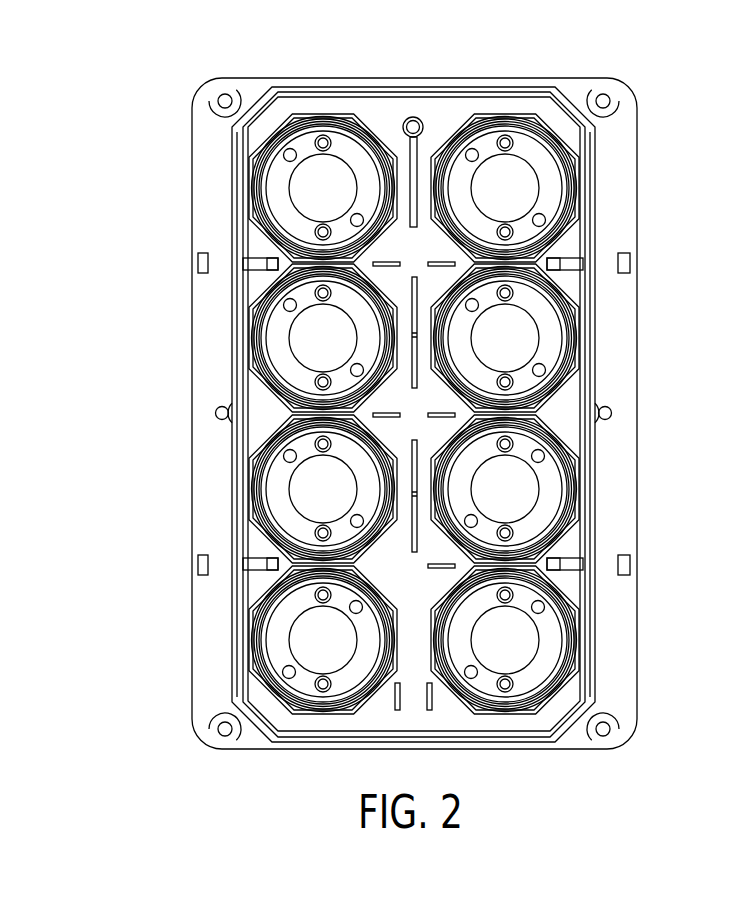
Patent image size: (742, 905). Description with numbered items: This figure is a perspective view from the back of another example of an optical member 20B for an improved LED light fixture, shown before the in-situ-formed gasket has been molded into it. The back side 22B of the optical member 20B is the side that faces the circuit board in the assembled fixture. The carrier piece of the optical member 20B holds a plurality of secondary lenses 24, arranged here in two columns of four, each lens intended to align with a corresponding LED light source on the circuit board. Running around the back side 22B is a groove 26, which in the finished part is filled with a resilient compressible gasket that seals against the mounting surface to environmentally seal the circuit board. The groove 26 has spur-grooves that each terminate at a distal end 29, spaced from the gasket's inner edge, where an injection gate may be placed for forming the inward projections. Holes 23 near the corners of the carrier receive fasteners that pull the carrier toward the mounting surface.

The optical member 20B is at (636, 64).
The back side 22B is at (385, 122).
The holes 23 is at (225, 731).
The secondary lenses 24 is at (280, 187).
The groove 26 is at (582, 653).
The distal end 29 is at (272, 264).